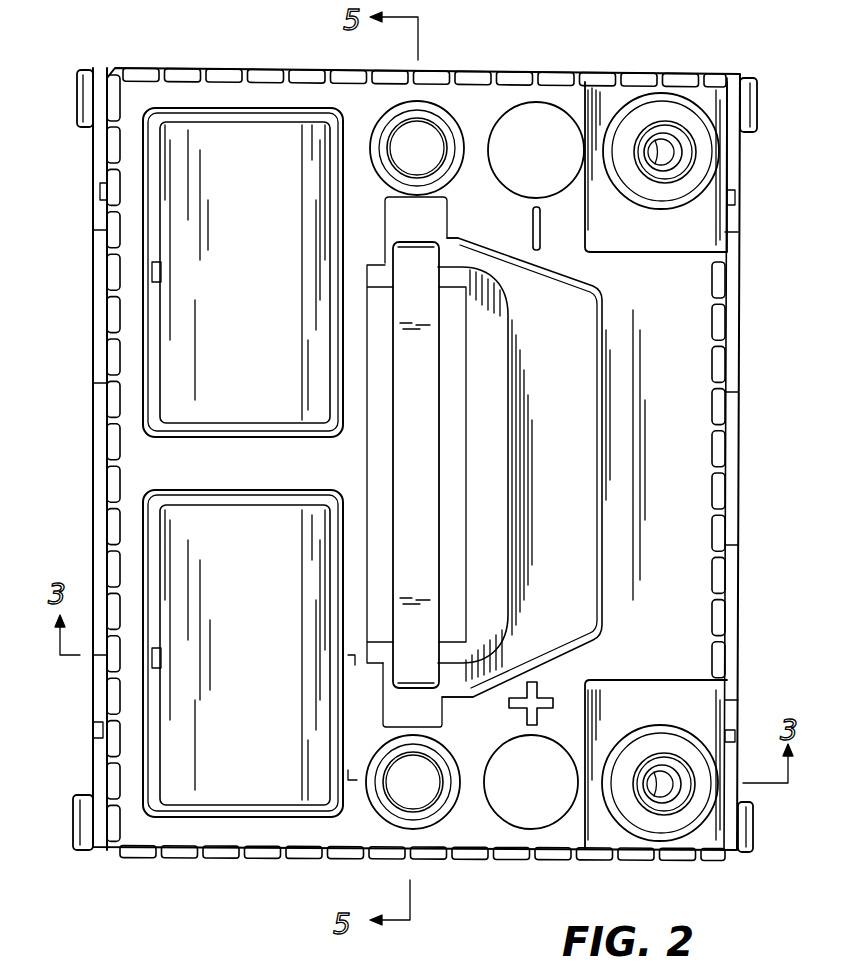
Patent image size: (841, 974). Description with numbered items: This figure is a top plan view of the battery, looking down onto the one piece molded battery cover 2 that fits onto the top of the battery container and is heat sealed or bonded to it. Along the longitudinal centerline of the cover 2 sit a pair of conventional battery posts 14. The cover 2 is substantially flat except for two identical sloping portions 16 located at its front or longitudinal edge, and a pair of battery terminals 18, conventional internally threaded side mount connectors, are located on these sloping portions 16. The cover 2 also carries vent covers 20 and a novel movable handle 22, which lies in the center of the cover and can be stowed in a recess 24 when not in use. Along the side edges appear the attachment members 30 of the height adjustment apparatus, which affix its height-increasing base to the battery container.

The battery cover 2 is at (188, 855).
The battery posts 14 is at (427, 127).
The sloping portions 16 is at (703, 223).
The battery terminals 18 is at (667, 193).
The vent covers 20 is at (260, 402).
The movable handle 22 is at (400, 458).
The recess 24 is at (572, 410).
The attachment members 30 is at (96, 440).